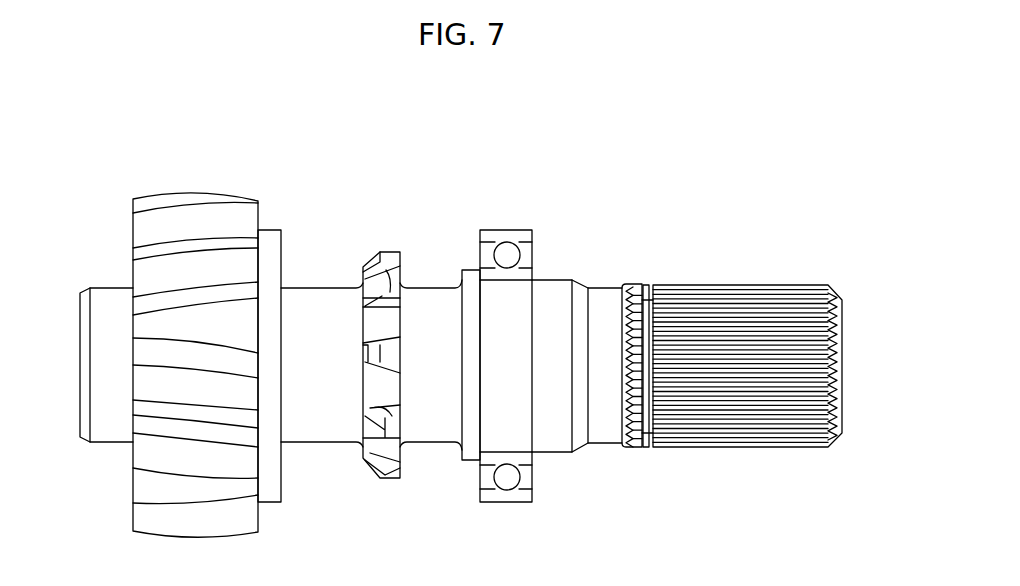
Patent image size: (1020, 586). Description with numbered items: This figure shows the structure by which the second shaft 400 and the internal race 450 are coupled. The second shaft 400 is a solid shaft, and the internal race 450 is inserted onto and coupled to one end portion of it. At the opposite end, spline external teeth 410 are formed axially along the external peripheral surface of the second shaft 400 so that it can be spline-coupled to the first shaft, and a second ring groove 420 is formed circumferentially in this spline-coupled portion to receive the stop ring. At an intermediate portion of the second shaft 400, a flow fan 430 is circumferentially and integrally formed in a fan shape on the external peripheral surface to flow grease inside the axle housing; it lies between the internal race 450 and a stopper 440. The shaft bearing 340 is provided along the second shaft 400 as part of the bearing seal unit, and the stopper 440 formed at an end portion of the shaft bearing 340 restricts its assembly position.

The internal race 450 is at (198, 223).
The flow fan 430 is at (390, 280).
The stopper 440 is at (472, 343).
The shaft bearing 340 is at (507, 241).
The second shaft 400 is at (553, 328).
The second ring groove 420 is at (648, 298).
The spline external teeth 410 is at (760, 305).